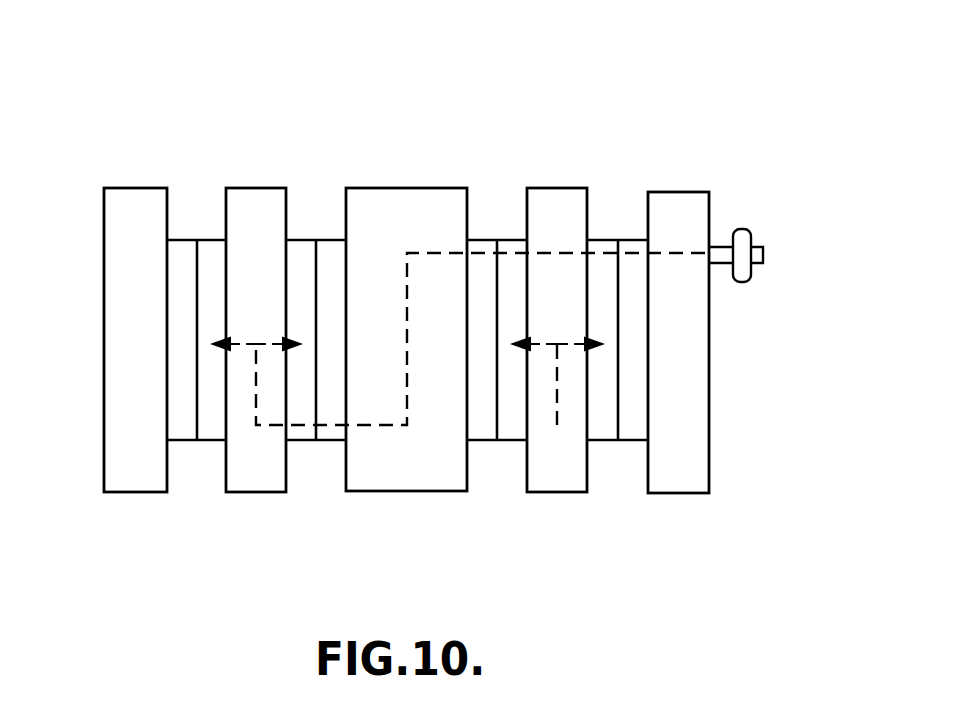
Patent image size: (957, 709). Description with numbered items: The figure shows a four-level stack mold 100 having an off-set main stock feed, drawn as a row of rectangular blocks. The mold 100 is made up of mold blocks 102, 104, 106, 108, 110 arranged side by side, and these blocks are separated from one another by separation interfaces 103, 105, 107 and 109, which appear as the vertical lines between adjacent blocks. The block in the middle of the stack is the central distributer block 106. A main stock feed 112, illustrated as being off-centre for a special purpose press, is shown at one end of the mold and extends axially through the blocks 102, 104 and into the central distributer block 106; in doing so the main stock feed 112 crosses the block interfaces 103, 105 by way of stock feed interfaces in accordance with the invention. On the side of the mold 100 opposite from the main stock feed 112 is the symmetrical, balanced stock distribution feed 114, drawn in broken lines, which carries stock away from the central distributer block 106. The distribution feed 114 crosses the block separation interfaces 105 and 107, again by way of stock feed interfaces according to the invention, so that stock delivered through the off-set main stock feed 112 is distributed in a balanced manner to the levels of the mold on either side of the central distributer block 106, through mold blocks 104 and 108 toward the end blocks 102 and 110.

The 4-level stack mold 100 is at (642, 172).
The mold block 102 is at (695, 493).
The separation interface 103 is at (618, 440).
The mold block 104 is at (565, 492).
The separation interface 105 is at (497, 440).
The central distributer block 106 is at (448, 491).
The separation interface 107 is at (316, 440).
The mold block 108 is at (250, 492).
The separation interface 109 is at (197, 428).
The mold block 110 is at (117, 492).
The main stock feed 112 is at (723, 248).
The stock distribution feed 114 is at (427, 425).